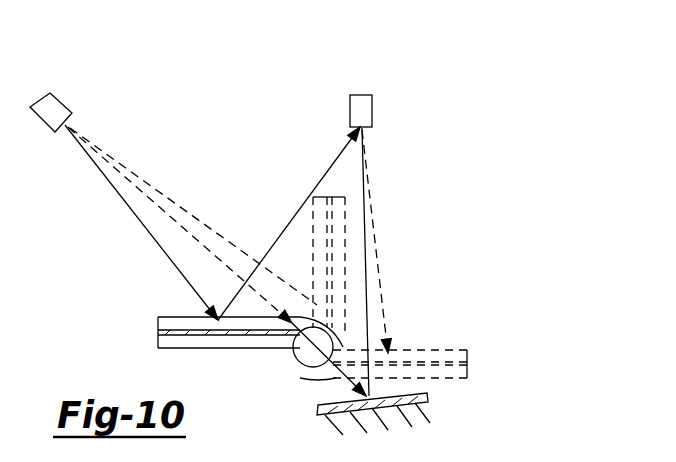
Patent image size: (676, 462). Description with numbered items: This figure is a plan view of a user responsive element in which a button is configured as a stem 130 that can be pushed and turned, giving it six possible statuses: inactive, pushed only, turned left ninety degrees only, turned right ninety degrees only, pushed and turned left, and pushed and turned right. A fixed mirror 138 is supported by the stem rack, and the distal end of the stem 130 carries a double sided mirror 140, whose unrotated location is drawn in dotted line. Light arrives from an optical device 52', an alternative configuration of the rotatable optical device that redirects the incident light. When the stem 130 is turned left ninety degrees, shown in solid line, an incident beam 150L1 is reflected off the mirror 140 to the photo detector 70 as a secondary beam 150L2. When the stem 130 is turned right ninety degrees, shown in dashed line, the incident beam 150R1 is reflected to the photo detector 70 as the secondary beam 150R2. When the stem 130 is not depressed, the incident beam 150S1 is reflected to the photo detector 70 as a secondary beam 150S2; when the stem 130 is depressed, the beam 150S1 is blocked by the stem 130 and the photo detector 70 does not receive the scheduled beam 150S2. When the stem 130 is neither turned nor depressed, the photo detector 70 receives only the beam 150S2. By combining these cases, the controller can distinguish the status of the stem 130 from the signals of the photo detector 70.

The optical device 52' is at (51, 89).
The photo-detector sensor 70 is at (360, 100).
The stem 130 is at (293, 357).
The fixed mirror 138 is at (317, 410).
The double sided mirror 140 is at (162, 330).
The incident beam 150L1 is at (150, 233).
The secondary beam 150L2 is at (330, 169).
The incident beam 150R1 is at (143, 182).
The secondary beam 150R2 is at (380, 256).
The incident beam 150S1 is at (218, 254).
The secondary beam 150S2 is at (368, 297).